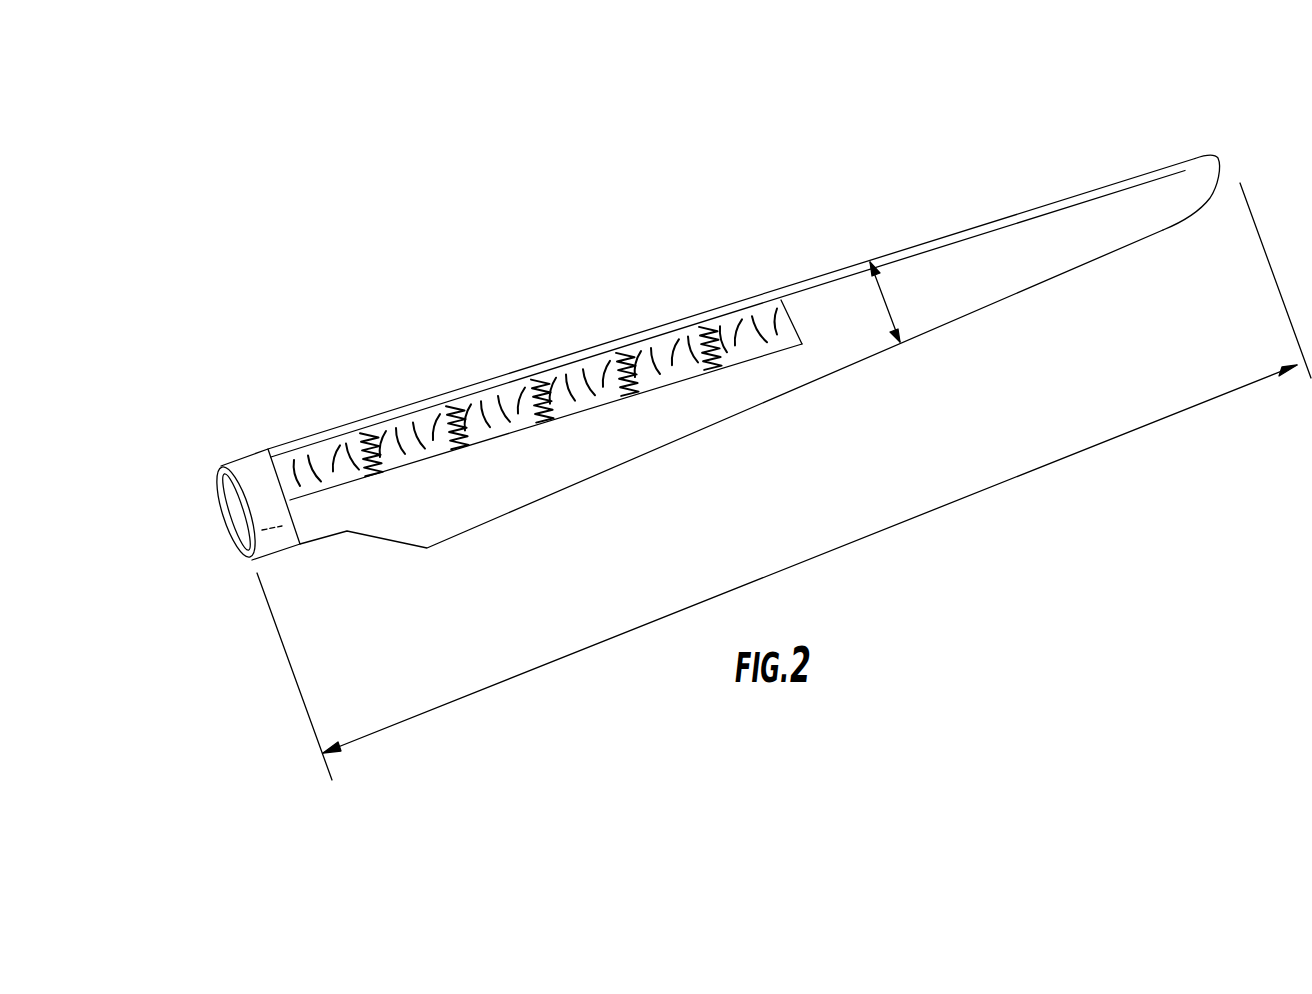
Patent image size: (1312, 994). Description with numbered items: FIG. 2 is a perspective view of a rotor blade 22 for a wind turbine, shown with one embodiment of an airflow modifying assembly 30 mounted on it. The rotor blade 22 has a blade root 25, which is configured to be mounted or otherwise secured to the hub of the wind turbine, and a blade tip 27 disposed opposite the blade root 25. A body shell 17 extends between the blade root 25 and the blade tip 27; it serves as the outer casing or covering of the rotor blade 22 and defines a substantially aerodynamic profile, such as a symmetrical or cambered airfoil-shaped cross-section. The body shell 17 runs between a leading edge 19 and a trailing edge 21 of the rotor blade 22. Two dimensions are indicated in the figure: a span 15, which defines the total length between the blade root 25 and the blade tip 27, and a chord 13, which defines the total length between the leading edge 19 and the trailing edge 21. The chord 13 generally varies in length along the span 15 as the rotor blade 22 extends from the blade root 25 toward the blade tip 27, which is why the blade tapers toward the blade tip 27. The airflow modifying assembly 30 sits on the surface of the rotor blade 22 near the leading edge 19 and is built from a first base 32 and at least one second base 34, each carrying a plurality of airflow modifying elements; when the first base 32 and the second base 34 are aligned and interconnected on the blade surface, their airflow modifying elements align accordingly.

The chord 13 is at (887, 290).
The span 15 is at (930, 513).
The body shell 17 is at (785, 378).
The leading edge 19 is at (600, 344).
The trailing edge 21 is at (633, 458).
The rotor blade 22 is at (358, 300).
The blade root 25 is at (230, 455).
The blade tip 27 is at (1218, 158).
The airflow modifying assembly 30 is at (315, 418).
The first base 32 is at (335, 480).
The second base 34 is at (415, 447).